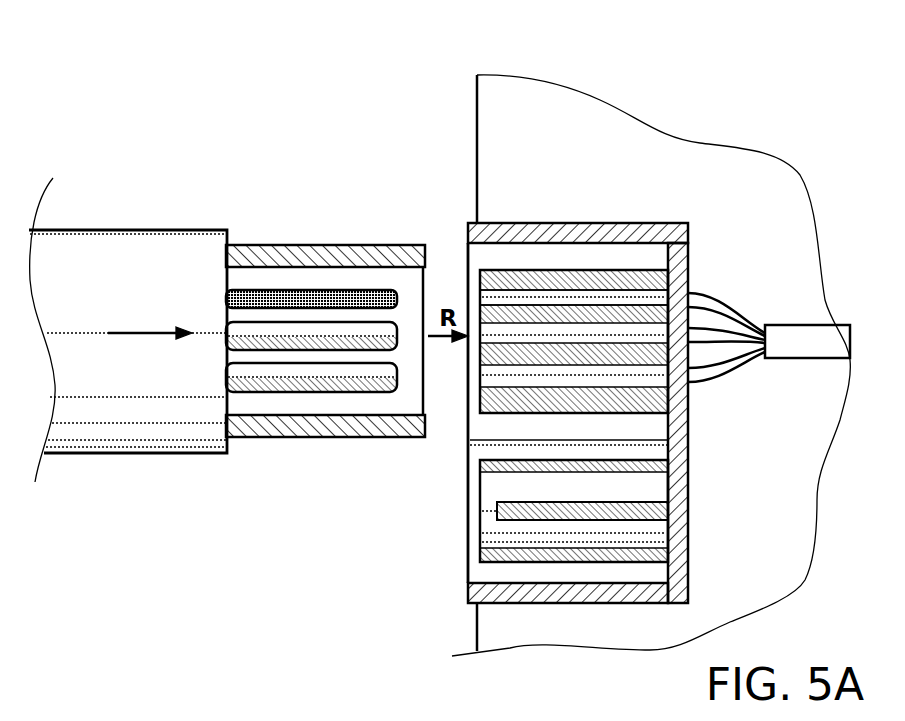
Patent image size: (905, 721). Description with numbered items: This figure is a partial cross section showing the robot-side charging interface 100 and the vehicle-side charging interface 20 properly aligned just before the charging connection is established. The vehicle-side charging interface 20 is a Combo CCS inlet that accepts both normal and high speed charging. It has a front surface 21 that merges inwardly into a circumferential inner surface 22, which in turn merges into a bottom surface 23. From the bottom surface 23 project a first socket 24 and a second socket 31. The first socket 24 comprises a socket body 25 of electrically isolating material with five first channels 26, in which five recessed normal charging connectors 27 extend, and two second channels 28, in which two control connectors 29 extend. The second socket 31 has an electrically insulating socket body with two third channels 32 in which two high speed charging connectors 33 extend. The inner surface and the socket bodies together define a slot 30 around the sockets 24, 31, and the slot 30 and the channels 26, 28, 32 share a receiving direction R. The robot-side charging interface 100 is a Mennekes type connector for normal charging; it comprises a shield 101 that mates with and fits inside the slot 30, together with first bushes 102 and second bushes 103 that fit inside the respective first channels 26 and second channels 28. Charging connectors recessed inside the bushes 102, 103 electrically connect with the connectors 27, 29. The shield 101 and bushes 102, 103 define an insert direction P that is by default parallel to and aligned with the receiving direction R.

The robot-side charging interface 100 is at (102, 423).
The shield 101 is at (265, 262).
The first bushes 102 is at (353, 337).
The second bushes 103 is at (322, 293).
The vehicle-side charging interface 20 is at (509, 404).
The front surface 21 is at (468, 230).
The inner surface 22 is at (568, 297).
The bottom surface 23 is at (688, 260).
The first socket 24 is at (503, 413).
The socket body 25 is at (645, 273).
The first channels 26 is at (563, 413).
The normal charging connectors 27 is at (643, 415).
The second channels 28 is at (634, 270).
The control connectors 29 is at (570, 270).
The slot 30 is at (508, 257).
The second socket 31 is at (478, 552).
The third channels 32 is at (490, 532).
The high speed charging connectors 33 is at (665, 508).